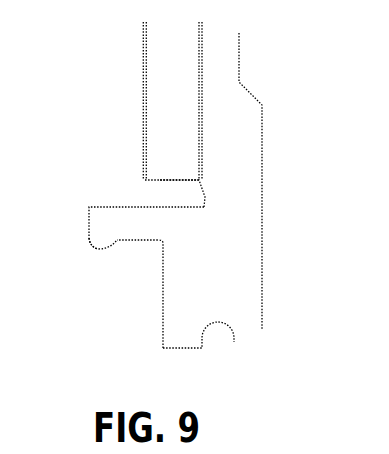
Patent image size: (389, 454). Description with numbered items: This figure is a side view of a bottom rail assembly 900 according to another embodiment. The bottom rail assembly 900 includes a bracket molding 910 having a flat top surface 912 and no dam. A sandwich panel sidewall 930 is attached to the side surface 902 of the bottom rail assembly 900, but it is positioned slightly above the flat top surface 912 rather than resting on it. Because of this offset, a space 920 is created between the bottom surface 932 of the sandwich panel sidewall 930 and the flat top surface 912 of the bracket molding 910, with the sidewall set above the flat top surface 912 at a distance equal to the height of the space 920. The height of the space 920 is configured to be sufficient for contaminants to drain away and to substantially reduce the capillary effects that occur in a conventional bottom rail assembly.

The bottom rail assembly 900 is at (262, 172).
The side surface 902 is at (203, 87).
The bracket molding 910 is at (102, 247).
The flat top surface 912 is at (114, 206).
The space 920 is at (148, 206).
The sandwich panel sidewall 930 is at (143, 102).
The bottom surface 932 is at (174, 182).